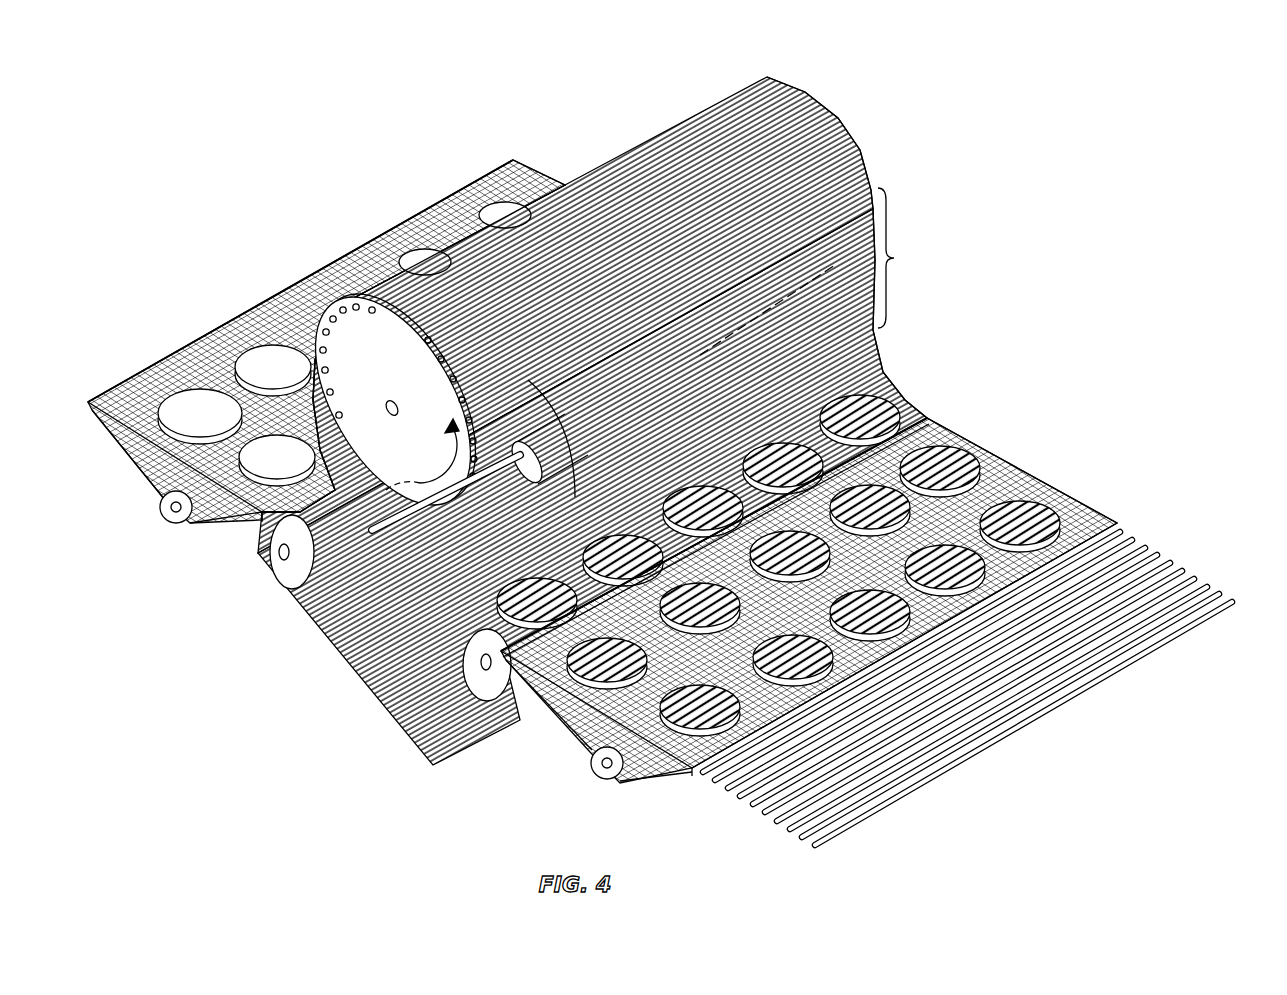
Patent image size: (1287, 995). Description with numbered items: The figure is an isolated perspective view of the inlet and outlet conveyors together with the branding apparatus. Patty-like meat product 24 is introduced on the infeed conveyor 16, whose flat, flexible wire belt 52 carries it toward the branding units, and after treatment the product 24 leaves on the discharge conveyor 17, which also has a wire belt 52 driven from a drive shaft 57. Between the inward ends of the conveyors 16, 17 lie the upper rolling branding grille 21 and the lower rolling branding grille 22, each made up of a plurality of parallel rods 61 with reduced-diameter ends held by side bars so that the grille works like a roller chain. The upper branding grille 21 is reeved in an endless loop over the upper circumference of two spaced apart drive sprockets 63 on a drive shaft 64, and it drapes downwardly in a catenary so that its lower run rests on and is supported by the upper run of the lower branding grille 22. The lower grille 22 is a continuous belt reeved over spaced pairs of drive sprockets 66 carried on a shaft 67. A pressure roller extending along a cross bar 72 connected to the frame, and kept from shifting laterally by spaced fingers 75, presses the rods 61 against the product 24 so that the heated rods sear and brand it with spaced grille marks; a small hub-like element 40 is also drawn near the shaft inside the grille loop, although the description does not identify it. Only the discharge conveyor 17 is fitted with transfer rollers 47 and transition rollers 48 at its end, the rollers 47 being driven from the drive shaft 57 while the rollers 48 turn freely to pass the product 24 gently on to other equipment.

The feed or inlet conveyor 16 is at (421, 203).
The discharge or outlet conveyor 17 is at (1119, 510).
The upper rolling branding grille 21 is at (846, 118).
The lower rolling branding grille 22 is at (343, 742).
The product 24 is at (268, 352).
The hub bearing 40 is at (470, 397).
The transfer rollers 47 is at (1132, 524).
The transition rollers 48 is at (1190, 568).
The wire belt 52 is at (528, 176).
The drive shaft 57 is at (170, 517).
The rods 61 is at (901, 258).
The drive sprockets 63 is at (346, 360).
The drive shaft 64 is at (392, 417).
The drive sprockets 66 is at (284, 566).
The shaft 67 is at (280, 551).
The cross bar 72 is at (388, 520).
The fingers 75 is at (463, 412).